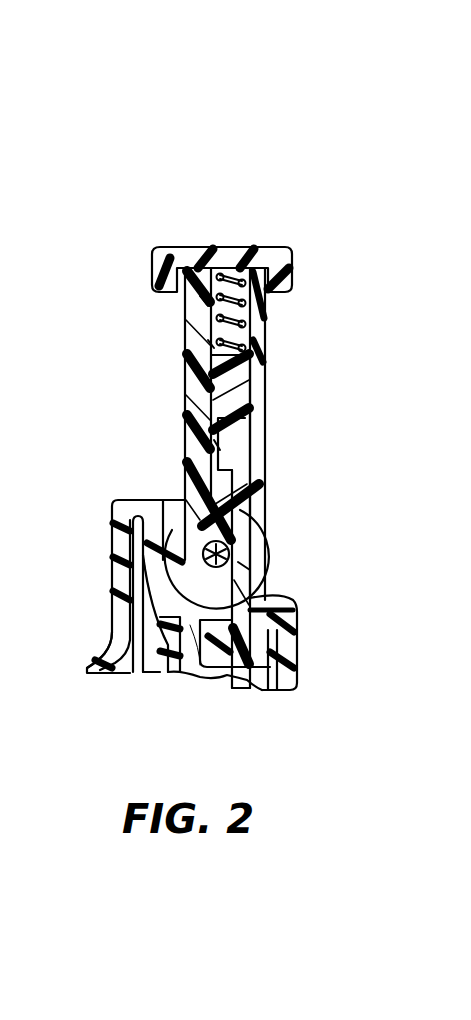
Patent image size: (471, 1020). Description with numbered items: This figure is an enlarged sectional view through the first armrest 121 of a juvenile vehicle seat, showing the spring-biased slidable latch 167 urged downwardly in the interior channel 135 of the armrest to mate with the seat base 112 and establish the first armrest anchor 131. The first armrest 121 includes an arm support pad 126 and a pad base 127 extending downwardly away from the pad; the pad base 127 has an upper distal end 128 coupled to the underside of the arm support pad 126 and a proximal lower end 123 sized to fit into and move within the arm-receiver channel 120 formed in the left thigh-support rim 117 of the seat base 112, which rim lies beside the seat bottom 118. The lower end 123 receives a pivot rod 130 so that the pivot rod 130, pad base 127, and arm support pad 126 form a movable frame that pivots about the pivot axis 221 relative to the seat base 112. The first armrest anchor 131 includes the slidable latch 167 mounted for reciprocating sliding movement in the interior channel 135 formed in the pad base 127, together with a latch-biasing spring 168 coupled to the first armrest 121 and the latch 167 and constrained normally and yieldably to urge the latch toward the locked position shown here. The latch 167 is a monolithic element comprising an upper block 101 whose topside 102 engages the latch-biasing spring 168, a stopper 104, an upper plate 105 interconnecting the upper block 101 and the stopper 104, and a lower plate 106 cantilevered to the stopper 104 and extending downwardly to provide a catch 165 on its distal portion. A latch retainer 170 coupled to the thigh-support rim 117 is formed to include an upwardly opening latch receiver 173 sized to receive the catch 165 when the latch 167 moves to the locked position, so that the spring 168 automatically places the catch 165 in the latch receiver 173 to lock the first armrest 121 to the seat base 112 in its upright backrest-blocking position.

The first armrest 121 is at (135, 240).
The arm support pad 126 is at (268, 248).
The latch-biasing spring 168 is at (230, 300).
The interior channel 135 is at (200, 301).
The topside 102 is at (214, 344).
The upper distal end 128 is at (266, 305).
The pad base 127 is at (182, 400).
The upper block 101 is at (238, 372).
The first armrest anchor 131 is at (286, 406).
The seat base 112 is at (116, 487).
The upper plate 105 is at (216, 447).
The slidable latch 167 is at (231, 455).
The stopper 104 is at (229, 482).
The arm-receiver channel 120 is at (178, 523).
The left thigh-support rim 117 is at (105, 546).
The pivot axis 221 is at (226, 548).
The lower end 123 is at (272, 553).
The lower plate 106 is at (243, 567).
The seat bottom 118 is at (84, 652).
The pivot rod 130 is at (161, 610).
The catch 165 is at (203, 626).
The latch receiver 173 is at (290, 673).
The latch retainer 170 is at (252, 688).